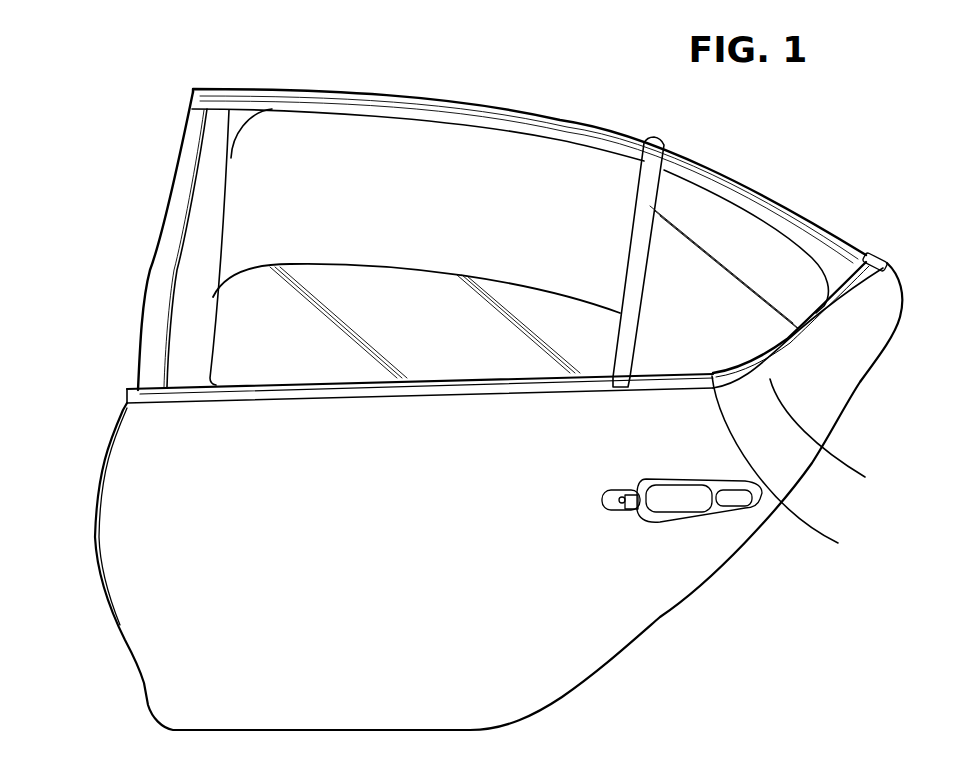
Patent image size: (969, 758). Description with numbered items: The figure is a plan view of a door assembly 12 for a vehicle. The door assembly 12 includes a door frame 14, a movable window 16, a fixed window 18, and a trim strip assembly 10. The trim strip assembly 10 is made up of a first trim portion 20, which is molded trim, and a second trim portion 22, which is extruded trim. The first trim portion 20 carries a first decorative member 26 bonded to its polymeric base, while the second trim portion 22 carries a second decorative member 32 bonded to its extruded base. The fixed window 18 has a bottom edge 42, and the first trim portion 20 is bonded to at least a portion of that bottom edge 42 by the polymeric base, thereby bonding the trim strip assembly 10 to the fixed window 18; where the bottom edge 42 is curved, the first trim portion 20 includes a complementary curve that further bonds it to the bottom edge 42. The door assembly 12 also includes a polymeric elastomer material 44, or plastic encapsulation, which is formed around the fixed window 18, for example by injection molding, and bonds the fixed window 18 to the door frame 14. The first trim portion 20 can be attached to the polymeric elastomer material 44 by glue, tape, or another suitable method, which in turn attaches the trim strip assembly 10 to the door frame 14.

The trim strip assembly 10 is at (116, 393).
The door assembly 12 is at (108, 110).
The door frame 14 is at (742, 562).
The movable window 16 is at (233, 348).
The fixed window 18 is at (758, 252).
The first trim portion 20 is at (810, 348).
The second trim portion 22 is at (157, 392).
The first decorative member 26 is at (840, 307).
The second decorative member 32 is at (195, 393).
The bottom edge 42 is at (787, 465).
The polymeric elastomer material 44 is at (829, 434).